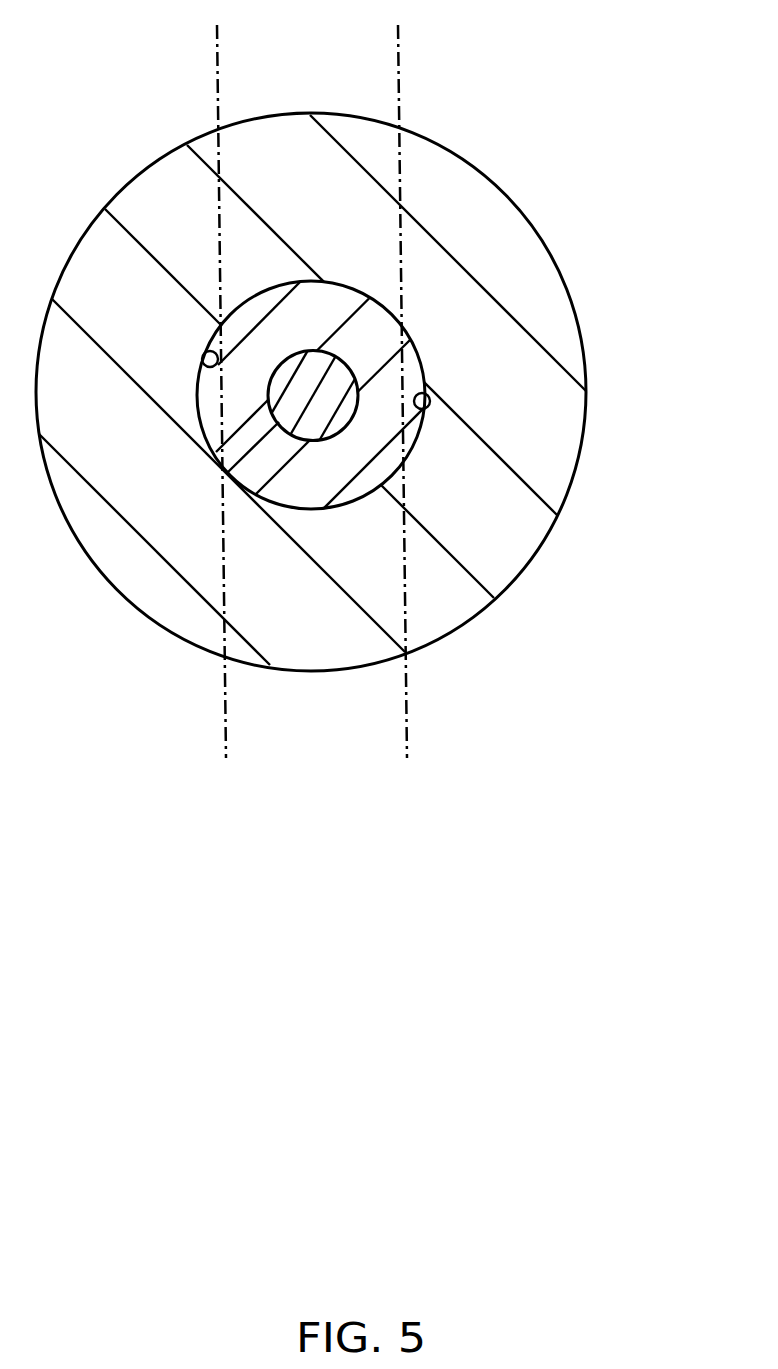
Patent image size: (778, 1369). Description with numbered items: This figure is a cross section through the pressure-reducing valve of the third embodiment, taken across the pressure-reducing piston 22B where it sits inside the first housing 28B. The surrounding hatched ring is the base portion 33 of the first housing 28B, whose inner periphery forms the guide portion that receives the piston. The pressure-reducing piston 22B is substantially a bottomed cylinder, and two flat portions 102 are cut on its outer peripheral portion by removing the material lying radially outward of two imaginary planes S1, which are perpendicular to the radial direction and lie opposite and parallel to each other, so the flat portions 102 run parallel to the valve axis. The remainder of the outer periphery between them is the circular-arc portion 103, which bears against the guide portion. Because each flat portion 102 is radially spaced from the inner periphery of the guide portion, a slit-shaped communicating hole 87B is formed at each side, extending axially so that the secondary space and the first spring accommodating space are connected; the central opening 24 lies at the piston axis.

The imaginary plane S1 is at (217, 78).
The base portion 33 is at (345, 392).
The first housing 28B is at (498, 212).
The pressure-reducing piston 22B is at (388, 331).
The circular-arc portion 103 is at (335, 296).
The flat portion 102 is at (235, 413).
The central shaft hole 24 is at (224, 478).
The communicating hole 87B is at (207, 352).